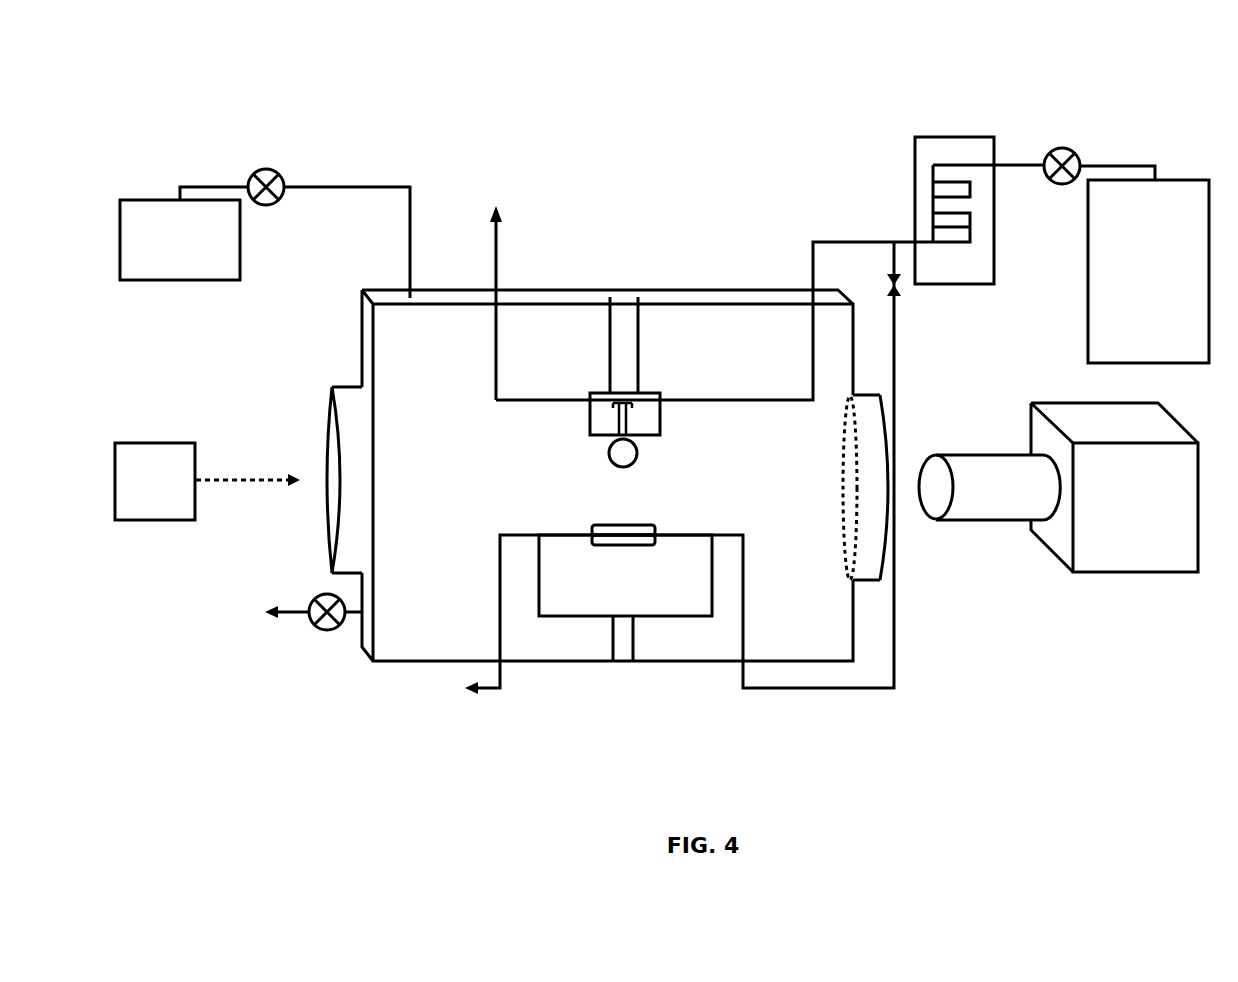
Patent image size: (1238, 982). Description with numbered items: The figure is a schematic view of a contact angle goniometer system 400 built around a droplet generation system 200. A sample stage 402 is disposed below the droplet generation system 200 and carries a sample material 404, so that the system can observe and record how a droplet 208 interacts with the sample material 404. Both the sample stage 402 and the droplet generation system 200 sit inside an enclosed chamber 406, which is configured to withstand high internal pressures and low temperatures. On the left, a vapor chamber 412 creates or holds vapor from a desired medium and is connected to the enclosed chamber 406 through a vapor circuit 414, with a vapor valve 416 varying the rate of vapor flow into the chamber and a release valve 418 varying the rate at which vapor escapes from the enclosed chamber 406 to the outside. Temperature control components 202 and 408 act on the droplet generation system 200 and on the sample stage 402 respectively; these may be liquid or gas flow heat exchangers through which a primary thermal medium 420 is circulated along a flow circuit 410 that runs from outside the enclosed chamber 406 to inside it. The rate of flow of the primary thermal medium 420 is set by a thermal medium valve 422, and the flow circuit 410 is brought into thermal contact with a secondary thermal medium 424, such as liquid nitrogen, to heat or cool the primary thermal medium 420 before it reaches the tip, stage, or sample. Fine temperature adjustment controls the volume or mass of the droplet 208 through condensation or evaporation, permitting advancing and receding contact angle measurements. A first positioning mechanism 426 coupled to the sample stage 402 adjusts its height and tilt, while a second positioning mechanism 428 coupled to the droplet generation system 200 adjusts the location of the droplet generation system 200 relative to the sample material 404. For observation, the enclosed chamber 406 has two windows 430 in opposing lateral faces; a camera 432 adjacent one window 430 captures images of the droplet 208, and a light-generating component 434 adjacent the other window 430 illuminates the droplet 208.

The contact angle goniometer system 400 is at (592, 130).
The droplet generation system 200 is at (581, 413).
The temperature control component 202 is at (660, 393).
The droplet 208 is at (637, 460).
The sample stage 402 is at (593, 577).
The sample material 404 is at (598, 530).
The enclosed chamber 406 is at (425, 663).
The temperature control component 408 is at (648, 540).
The flow circuit 410 is at (818, 242).
The vapor chamber 412 is at (163, 282).
The vapor circuit 414 is at (363, 185).
The vapor valve 416 is at (263, 172).
The release valve 418 is at (328, 623).
The primary thermal medium 420 is at (1160, 213).
The thermal medium valve 422 is at (1062, 148).
The secondary thermal medium 424 is at (970, 267).
The first positioning mechanism 426 is at (625, 642).
The second positioning mechanism 428 is at (625, 318).
The window 430 is at (355, 410).
The camera 432 is at (1155, 553).
The light-generating component 434 is at (180, 502).